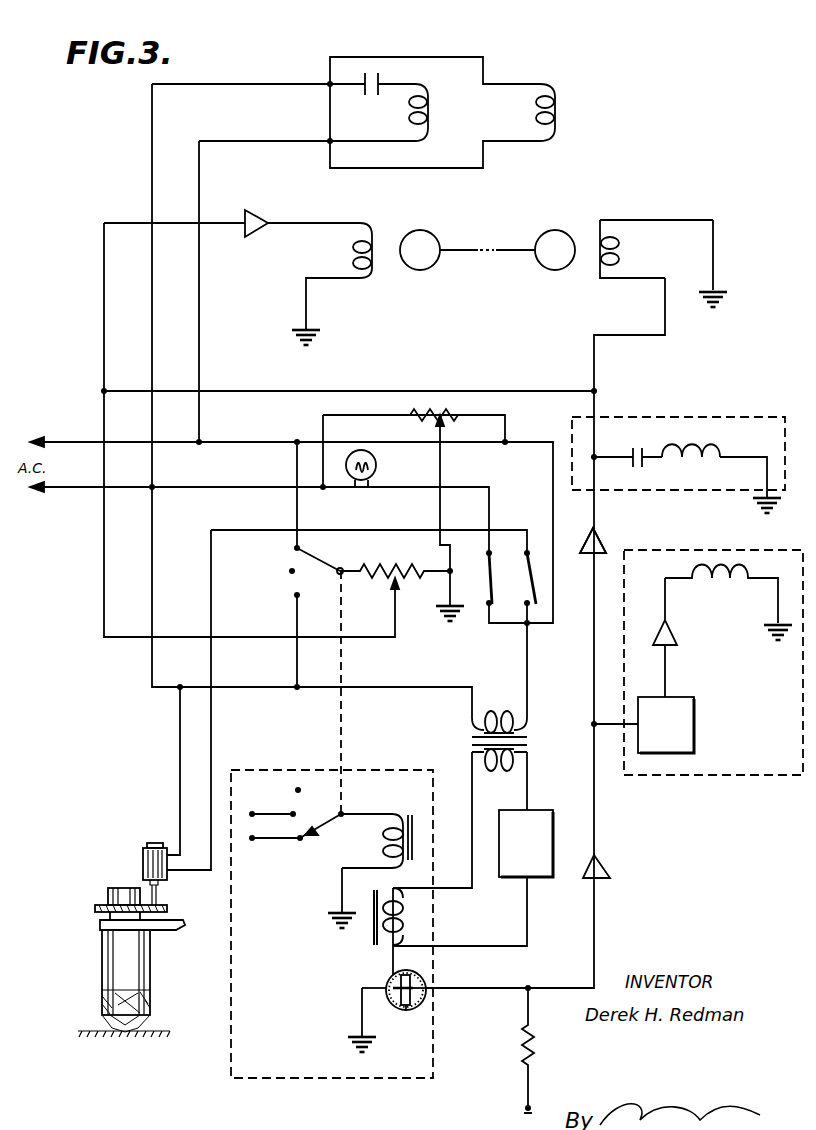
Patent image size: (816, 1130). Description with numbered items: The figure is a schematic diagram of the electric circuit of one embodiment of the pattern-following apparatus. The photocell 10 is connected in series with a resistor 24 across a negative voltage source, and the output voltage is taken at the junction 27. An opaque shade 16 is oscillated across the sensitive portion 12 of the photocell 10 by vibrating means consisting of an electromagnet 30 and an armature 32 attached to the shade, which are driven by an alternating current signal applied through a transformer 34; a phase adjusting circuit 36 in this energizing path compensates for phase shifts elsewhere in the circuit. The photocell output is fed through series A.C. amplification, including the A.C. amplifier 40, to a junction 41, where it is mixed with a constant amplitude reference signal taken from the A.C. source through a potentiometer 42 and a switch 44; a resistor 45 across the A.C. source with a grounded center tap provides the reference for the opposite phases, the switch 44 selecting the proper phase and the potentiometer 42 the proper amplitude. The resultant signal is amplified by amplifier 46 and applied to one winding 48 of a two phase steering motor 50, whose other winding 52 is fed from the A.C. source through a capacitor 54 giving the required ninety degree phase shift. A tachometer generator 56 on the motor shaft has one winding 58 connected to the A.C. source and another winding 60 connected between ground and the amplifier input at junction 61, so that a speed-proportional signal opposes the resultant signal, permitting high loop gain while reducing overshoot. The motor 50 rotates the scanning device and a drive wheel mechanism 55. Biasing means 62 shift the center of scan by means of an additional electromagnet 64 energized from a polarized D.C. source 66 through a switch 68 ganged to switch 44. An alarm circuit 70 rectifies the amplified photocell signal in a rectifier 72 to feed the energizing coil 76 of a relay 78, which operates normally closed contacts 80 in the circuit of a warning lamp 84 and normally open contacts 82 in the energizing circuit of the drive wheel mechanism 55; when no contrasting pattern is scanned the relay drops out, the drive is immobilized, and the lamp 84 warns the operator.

The photocell 10 is at (424, 978).
The sensitive portion 12 is at (418, 1000).
The opaque shade 16 is at (414, 1007).
The resistor 24 is at (533, 1040).
The junction 27 is at (531, 985).
The electromagnet 30 is at (378, 950).
The armature 32 is at (394, 904).
The transformer 34 is at (470, 741).
The phase adjusting circuit 36 is at (569, 792).
The A.C. amplifier 40 is at (597, 536).
The junction 41 is at (102, 391).
The potentiometer 42 is at (394, 553).
The switch 44 is at (290, 552).
The resistor 45 is at (440, 409).
The amplifier 46 is at (278, 218).
The winding 48 is at (352, 258).
The two phase steering motor 50 is at (432, 231).
The winding 52 is at (430, 107).
The capacitor 54 is at (366, 96).
The drive wheel mechanism 55 is at (101, 957).
The tachometer generator 56 is at (545, 230).
The winding 58 is at (560, 102).
The winding 60 is at (620, 252).
The junction 61 is at (595, 391).
The biasing means 62 is at (313, 846).
The electromagnet 64 is at (410, 799).
The D.C. source 66 is at (262, 806).
The switch 68 is at (325, 831).
The alarm circuit 70 is at (722, 538).
The rectifier 72 is at (695, 725).
The energizing coil 76 is at (722, 584).
The relay 78 is at (690, 565).
The normally closed contacts 80 is at (488, 586).
The normally open contacts 82 is at (534, 550).
The warning lamp 84 is at (376, 463).